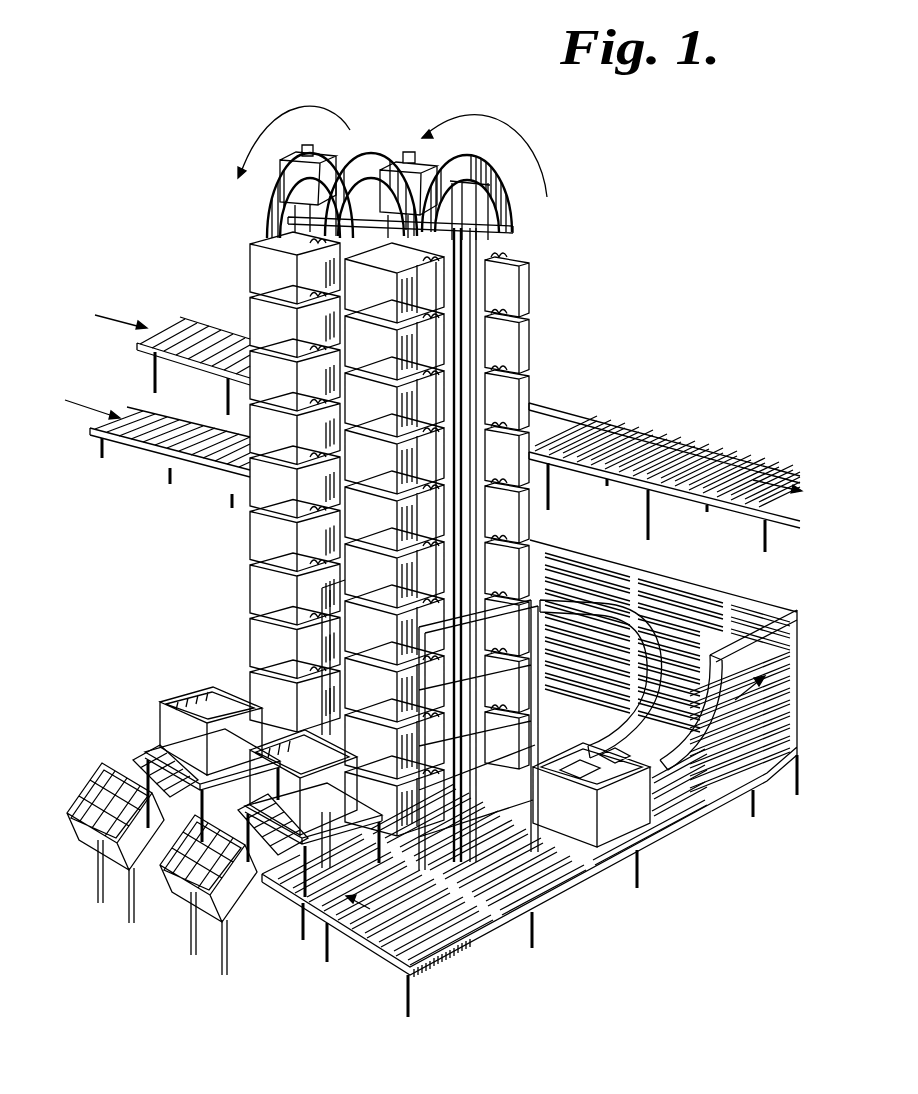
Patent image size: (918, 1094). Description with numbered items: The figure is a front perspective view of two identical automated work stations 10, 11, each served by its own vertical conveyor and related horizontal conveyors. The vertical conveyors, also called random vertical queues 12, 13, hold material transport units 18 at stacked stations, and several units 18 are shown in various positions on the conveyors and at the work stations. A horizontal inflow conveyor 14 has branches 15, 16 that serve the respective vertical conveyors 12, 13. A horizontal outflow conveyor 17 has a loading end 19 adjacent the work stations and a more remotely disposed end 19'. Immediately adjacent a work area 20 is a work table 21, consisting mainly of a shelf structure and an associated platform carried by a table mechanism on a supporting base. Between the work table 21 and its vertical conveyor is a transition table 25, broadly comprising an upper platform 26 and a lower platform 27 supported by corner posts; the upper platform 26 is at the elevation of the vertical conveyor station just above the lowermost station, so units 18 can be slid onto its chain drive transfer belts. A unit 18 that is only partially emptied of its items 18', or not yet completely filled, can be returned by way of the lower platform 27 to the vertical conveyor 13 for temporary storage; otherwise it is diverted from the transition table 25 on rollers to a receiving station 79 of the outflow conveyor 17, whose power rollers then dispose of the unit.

The work station 10 is at (138, 714).
The work station 11 is at (245, 926).
The vertical conveyor 12 is at (360, 143).
The vertical conveyor 13 is at (518, 224).
The horizontal inflow conveyor 14 is at (135, 447).
The branch 15 is at (570, 668).
The branch 16 is at (722, 612).
The horizontal outflow conveyor 17 is at (585, 884).
The material transport unit 18 is at (359, 617).
The items 18' is at (350, 866).
The loading end 19 is at (403, 913).
The remotely disposed end 19' is at (743, 738).
The work area 20 is at (100, 1041).
The work table 21 is at (140, 771).
The transition table 25 is at (368, 787).
The upper platform 26 is at (230, 762).
The lower platform 27 is at (142, 873).
The receiving station 79 is at (453, 925).